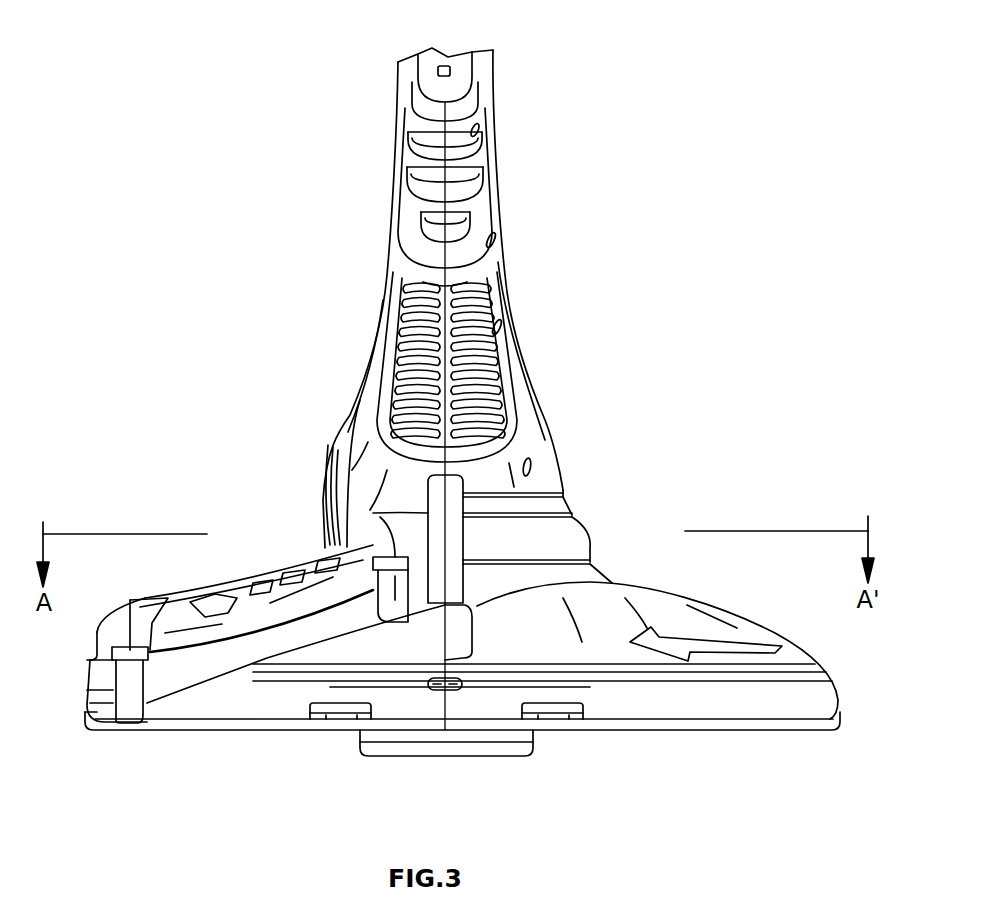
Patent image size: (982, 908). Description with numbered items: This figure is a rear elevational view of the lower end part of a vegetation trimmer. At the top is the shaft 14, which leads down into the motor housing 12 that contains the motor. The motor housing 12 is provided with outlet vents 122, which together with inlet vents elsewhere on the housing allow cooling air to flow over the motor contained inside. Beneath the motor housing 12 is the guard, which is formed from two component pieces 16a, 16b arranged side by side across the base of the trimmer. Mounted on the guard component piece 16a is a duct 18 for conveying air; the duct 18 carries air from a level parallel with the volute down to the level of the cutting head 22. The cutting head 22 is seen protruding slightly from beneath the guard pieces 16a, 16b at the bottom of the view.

The motor housing 12 is at (540, 478).
The shaft 14 is at (460, 72).
The outlet vents 122 is at (412, 347).
The duct 18 is at (248, 625).
The guard component piece 16a is at (247, 700).
The guard component piece 16b is at (598, 628).
The cutting head 22 is at (474, 740).